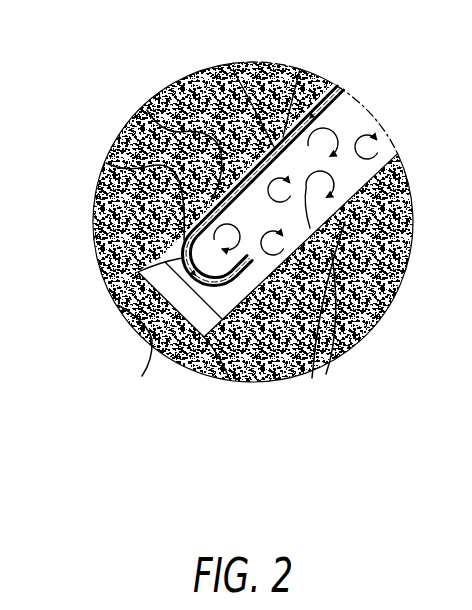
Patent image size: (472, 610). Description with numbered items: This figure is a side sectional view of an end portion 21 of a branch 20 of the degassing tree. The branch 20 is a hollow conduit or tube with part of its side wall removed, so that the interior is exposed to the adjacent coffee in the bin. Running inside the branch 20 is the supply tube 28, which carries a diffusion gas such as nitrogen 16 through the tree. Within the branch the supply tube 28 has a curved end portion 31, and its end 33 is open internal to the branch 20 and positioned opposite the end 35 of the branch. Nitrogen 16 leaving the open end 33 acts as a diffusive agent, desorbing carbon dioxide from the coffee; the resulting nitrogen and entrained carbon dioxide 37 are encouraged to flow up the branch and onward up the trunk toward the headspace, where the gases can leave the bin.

The nitrogen 16 is at (233, 70).
The branch 20 is at (106, 163).
The end portion of branch 21 is at (147, 110).
The supply tube 28 is at (300, 69).
The curved end portion 31 is at (123, 308).
The end of supply tube 33 is at (221, 378).
The end of branch 35 is at (151, 350).
The nitrogen and entrained carbon dioxide 37 is at (327, 373).